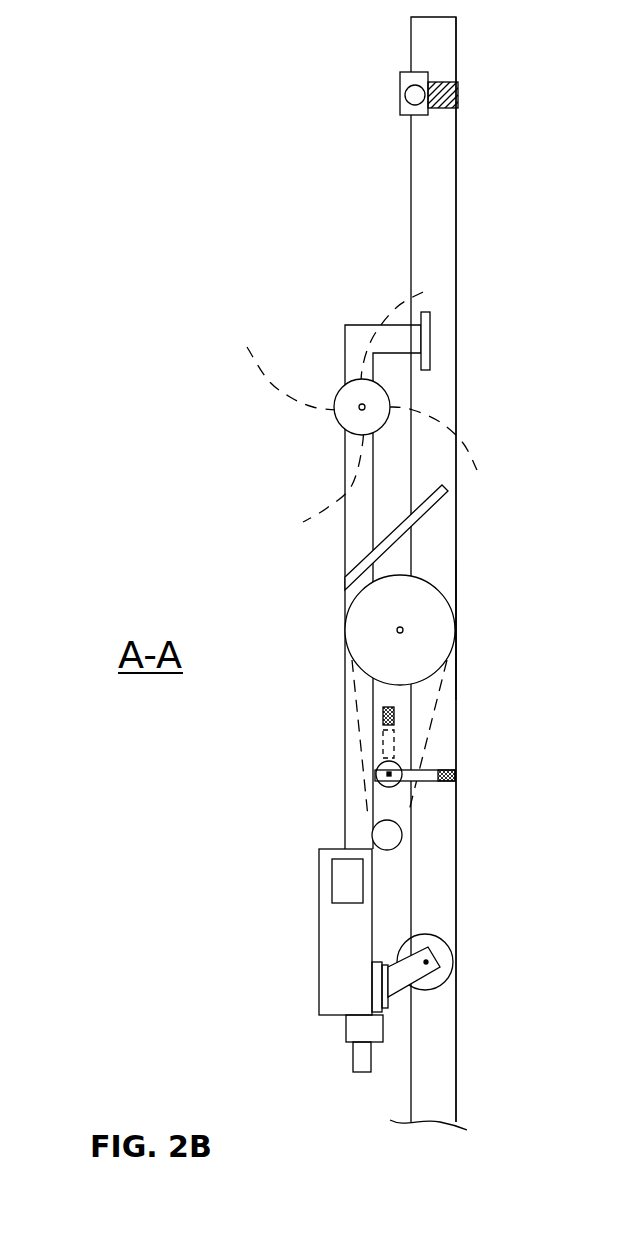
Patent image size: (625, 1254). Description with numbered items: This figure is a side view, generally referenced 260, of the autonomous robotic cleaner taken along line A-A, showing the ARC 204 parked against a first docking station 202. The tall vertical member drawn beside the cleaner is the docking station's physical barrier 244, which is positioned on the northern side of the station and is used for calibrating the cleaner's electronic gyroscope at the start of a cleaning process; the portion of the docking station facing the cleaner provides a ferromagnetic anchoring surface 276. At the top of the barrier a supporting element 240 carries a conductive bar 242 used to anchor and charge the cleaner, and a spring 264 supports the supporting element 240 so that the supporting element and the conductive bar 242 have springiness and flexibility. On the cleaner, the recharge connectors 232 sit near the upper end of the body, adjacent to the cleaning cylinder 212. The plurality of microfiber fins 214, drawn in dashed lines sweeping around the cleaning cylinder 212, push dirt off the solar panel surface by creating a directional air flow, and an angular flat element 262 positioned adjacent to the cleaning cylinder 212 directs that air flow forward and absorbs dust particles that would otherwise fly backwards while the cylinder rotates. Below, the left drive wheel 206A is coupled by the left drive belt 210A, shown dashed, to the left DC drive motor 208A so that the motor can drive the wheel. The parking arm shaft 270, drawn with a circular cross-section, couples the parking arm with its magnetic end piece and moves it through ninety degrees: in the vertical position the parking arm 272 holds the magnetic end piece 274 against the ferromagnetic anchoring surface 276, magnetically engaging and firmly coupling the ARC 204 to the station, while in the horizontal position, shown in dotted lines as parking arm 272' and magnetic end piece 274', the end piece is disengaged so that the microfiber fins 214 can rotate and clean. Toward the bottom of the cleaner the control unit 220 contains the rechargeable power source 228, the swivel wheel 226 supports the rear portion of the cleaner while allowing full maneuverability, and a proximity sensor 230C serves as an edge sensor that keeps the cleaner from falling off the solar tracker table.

The side view of the autonomous robotic cleaner 260 is at (180, 52).
The first docking station 202 is at (456, 1088).
The physical barrier 244 is at (433, 205).
The ferromagnetic anchoring surface 276 is at (455, 582).
The supporting element 240 is at (410, 78).
The conductive bar 242 is at (405, 100).
The spring 264 is at (442, 84).
The recharge connectors 232 is at (392, 340).
The microfiber fins 214 is at (267, 378).
The cleaning cylinder 212 is at (352, 418).
The angular flat element 262 is at (415, 526).
The autonomous robotic cleaner 204 is at (332, 583).
The left drive belt 210A is at (360, 752).
The left drive wheel 206A is at (363, 631).
The magnetic end piece 274' is at (323, 701).
The parking arm 272' is at (442, 730).
The parking arm 272 is at (438, 809).
The magnetic end piece 274 is at (486, 759).
The parking arm shaft 270 is at (398, 787).
The left DC drive motor 208A is at (373, 830).
The control unit 220 is at (337, 955).
The rechargeable power source 228 is at (338, 873).
The proximity sensor 230C is at (362, 1060).
The swivel wheel 226 is at (455, 958).